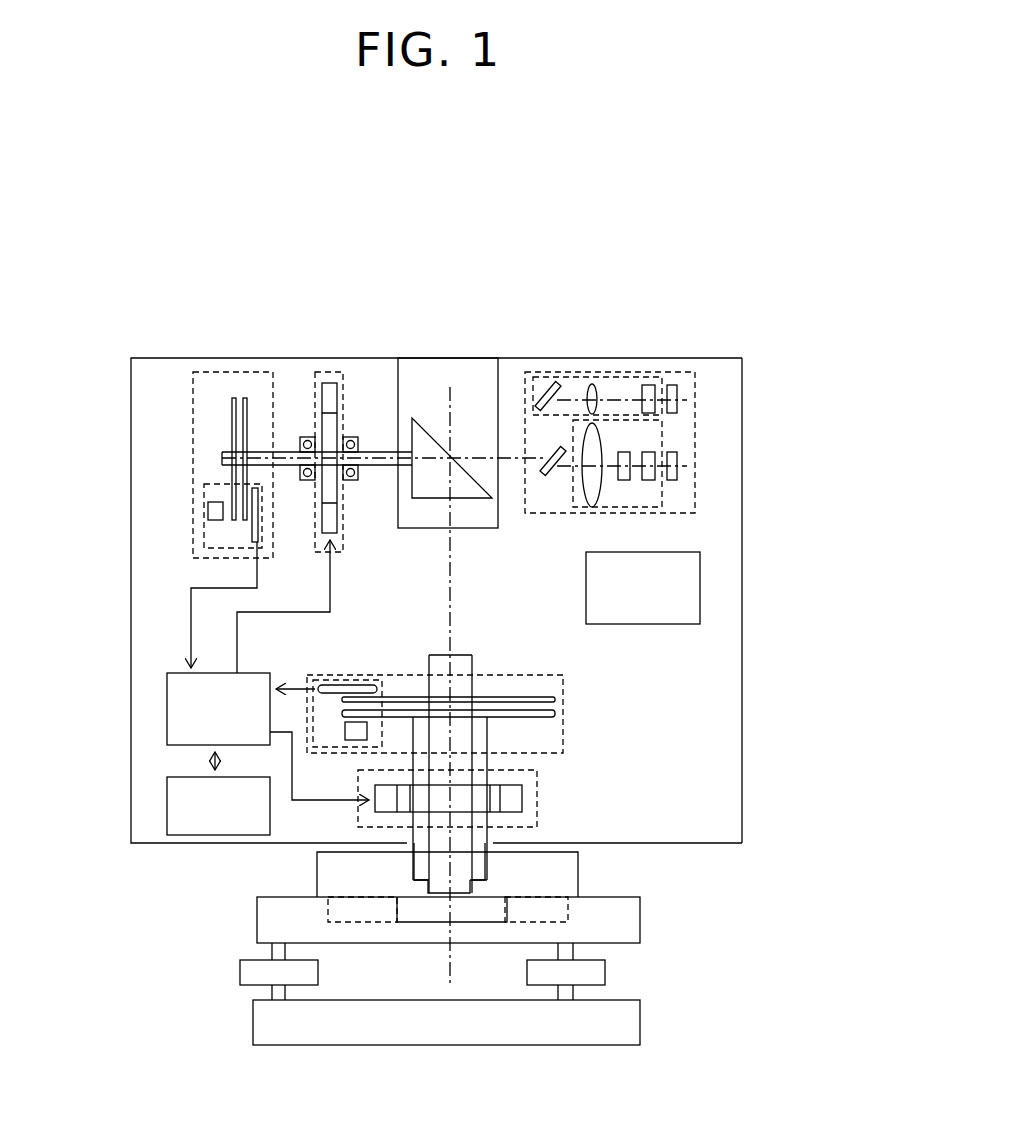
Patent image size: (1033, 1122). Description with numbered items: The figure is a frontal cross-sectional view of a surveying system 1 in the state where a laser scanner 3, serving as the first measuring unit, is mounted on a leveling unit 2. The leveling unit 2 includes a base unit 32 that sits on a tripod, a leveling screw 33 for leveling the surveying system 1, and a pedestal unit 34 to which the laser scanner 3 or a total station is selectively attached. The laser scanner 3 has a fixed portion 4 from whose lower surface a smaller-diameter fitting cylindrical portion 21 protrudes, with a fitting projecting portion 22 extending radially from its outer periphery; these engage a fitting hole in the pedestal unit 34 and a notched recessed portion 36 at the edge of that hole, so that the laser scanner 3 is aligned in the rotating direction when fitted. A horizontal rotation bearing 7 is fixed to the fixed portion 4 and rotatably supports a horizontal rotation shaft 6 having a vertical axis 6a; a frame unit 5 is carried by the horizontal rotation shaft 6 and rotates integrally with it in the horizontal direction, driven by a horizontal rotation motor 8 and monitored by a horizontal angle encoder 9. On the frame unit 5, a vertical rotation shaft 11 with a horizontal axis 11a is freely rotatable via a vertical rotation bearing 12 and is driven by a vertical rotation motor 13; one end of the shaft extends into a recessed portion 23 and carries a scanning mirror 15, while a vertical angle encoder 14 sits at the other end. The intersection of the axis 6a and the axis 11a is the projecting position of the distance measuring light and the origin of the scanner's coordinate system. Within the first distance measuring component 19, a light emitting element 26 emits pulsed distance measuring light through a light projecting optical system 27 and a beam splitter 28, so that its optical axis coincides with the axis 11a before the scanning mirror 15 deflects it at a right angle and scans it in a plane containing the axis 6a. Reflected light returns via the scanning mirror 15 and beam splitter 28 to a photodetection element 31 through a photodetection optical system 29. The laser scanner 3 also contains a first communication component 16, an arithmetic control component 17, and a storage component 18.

The surveying system 1 is at (80, 293).
The leveling unit 2 is at (250, 916).
The laser scanner 3 is at (748, 418).
The fixed portion 4 is at (580, 873).
The frame unit 5 is at (132, 522).
The horizontal rotation shaft 6 is at (472, 685).
The vertical axis 6a is at (447, 604).
The horizontal rotation bearing 7 is at (487, 865).
The horizontal rotation motor 8 is at (537, 800).
The horizontal angle encoder 9 is at (563, 693).
The vertical rotation shaft 11 is at (376, 467).
The horizontal axis 11a is at (192, 458).
The vertical rotation bearing 12 is at (352, 437).
The vertical rotation motor 13 is at (323, 372).
The vertical angle encoder 14 is at (218, 372).
The scanning mirror 15 is at (422, 415).
The first communication component 16 is at (700, 575).
The arithmetic control component 17 is at (167, 710).
The storage component 18 is at (167, 800).
The first distance measuring component 19 is at (588, 373).
The fitting cylindrical portion 21 is at (573, 910).
The fitting projecting portion 22 is at (477, 923).
The recessed portion 23 is at (430, 360).
The light emitting element 26 is at (678, 388).
The light projecting optical system 27 is at (536, 403).
The beam splitter 28 is at (550, 477).
The photodetection optical system 29 is at (612, 508).
The photodetection element 31 is at (677, 473).
The base unit 32 is at (640, 1015).
The leveling screw 33 is at (240, 972).
The pedestal unit 34 is at (640, 912).
The notched recessed portion 36 is at (397, 907).